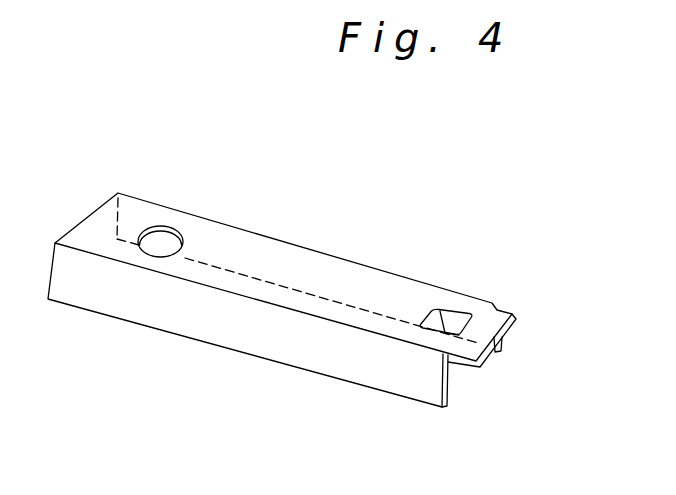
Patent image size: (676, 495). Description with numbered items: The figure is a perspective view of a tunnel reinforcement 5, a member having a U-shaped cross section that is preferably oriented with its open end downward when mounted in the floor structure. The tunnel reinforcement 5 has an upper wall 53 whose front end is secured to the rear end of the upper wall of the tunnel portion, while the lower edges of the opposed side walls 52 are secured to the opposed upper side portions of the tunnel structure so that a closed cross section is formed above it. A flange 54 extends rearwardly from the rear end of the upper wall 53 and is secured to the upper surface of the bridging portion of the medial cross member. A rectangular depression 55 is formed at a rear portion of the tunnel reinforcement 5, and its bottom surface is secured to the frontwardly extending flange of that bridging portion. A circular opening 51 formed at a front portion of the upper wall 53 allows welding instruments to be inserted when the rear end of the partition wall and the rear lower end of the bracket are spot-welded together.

The tunnel reinforcement 5 is at (318, 281).
The circular opening 51 is at (173, 237).
The side walls 52 is at (203, 332).
The upper wall 53 is at (102, 222).
The flange 54 is at (510, 312).
The rectangular depression 55 is at (452, 322).